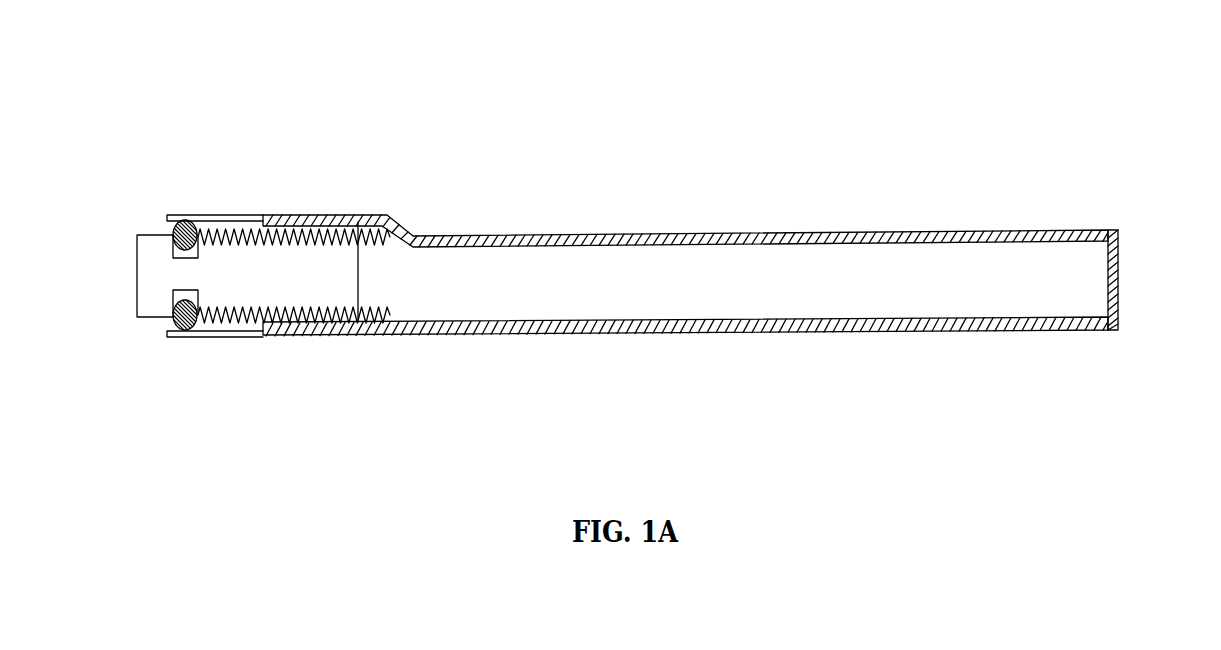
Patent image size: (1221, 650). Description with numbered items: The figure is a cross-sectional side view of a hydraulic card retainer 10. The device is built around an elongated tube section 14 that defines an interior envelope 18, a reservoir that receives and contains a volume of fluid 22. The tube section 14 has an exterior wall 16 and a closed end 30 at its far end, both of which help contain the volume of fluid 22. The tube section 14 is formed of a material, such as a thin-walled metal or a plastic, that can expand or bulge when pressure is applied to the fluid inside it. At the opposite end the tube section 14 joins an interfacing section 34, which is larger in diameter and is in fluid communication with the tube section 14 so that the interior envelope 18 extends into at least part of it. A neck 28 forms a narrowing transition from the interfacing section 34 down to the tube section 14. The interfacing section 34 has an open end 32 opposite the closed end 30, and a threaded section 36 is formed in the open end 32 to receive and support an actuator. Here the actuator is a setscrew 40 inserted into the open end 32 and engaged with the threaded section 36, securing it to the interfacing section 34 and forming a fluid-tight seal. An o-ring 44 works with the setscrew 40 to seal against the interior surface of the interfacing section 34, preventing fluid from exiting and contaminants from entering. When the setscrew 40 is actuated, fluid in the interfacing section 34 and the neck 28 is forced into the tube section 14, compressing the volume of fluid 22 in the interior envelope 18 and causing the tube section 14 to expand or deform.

The hydraulic card retainer 10 is at (174, 100).
The tube section 14 is at (889, 172).
The exterior wall 16 is at (1023, 230).
The interior envelope 18 is at (987, 295).
The volume of fluid 22 is at (833, 303).
The neck 28 is at (421, 210).
The closed end 30 is at (1118, 286).
The open end 32 is at (156, 219).
The interfacing section 34 is at (331, 188).
The threaded section 36 is at (388, 310).
The setscrew 40 is at (135, 257).
The o-ring 44 is at (195, 325).